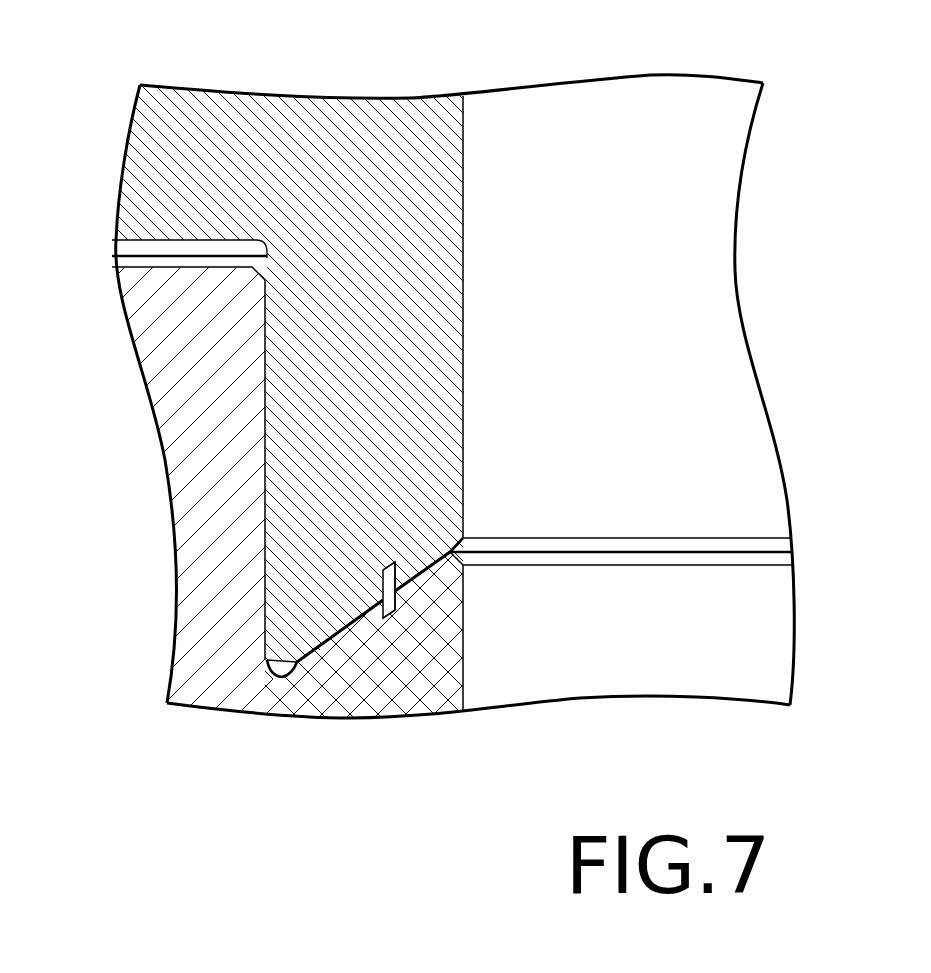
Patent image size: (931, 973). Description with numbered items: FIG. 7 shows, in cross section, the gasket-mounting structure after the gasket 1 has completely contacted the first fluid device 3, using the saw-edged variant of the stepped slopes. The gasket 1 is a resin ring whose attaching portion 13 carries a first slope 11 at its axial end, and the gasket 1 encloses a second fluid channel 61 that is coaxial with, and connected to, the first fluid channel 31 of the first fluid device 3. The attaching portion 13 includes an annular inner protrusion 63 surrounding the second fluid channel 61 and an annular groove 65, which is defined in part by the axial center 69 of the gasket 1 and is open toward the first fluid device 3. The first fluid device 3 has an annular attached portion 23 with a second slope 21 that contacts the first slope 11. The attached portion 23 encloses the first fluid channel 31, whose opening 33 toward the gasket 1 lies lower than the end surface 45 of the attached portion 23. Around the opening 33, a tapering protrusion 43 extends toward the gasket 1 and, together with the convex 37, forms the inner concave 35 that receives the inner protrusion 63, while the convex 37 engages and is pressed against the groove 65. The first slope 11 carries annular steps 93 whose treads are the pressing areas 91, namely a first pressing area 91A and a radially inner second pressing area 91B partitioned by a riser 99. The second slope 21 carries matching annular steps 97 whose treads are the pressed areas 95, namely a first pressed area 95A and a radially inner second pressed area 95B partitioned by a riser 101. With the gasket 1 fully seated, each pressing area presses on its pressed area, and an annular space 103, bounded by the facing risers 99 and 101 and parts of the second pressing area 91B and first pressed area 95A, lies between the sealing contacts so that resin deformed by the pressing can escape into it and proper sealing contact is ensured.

The gasket 1 is at (381, 173).
The first fluid device 3 is at (228, 680).
The first slope 11 is at (431, 585).
The attaching portion 13 is at (300, 553).
The second slope 21 is at (437, 560).
The attached portion 23 is at (775, 602).
The first fluid channel 31 is at (660, 655).
The opening 33 is at (686, 551).
The inner concave 35 is at (282, 678).
The convex 37 is at (134, 264).
The protrusion 43 is at (450, 633).
The end surface 45 is at (247, 253).
The second fluid channel 61 is at (615, 230).
The inner protrusion 63 is at (467, 343).
The groove 65 is at (165, 246).
The axial center 69 is at (196, 108).
The pressing areas 91 is at (544, 655).
The first pressing area 91A is at (318, 648).
The second pressing area 91B is at (455, 567).
The annular steps 93 is at (419, 591).
The pressed areas 95 is at (315, 513).
The first pressed area 95A is at (318, 648).
The second pressed area 95B is at (405, 595).
The annular steps 97 is at (350, 648).
The riser 99 is at (398, 607).
The riser 101 is at (457, 702).
The annular space 103 is at (392, 563).